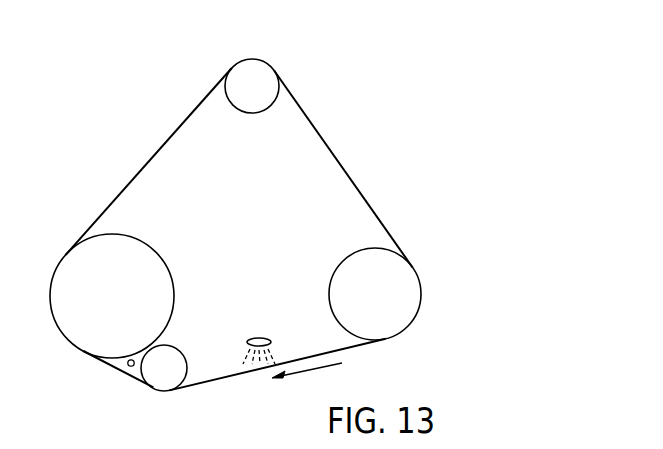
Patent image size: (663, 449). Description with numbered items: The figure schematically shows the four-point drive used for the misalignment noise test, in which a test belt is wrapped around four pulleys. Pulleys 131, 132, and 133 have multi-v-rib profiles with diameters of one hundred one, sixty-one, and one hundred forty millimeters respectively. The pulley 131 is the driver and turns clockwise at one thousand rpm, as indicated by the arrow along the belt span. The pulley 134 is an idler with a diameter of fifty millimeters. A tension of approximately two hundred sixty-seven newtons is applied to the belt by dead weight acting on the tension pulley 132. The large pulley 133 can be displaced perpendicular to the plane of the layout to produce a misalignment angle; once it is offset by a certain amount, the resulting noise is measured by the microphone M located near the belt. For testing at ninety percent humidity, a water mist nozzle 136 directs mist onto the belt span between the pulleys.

The pulley 131 is at (443, 313).
The tension pulley 132 is at (252, 59).
The pulley 133 is at (50, 290).
The idler pulley 134 is at (163, 392).
The water mist nozzle 136 is at (268, 338).
The microphone M is at (128, 366).